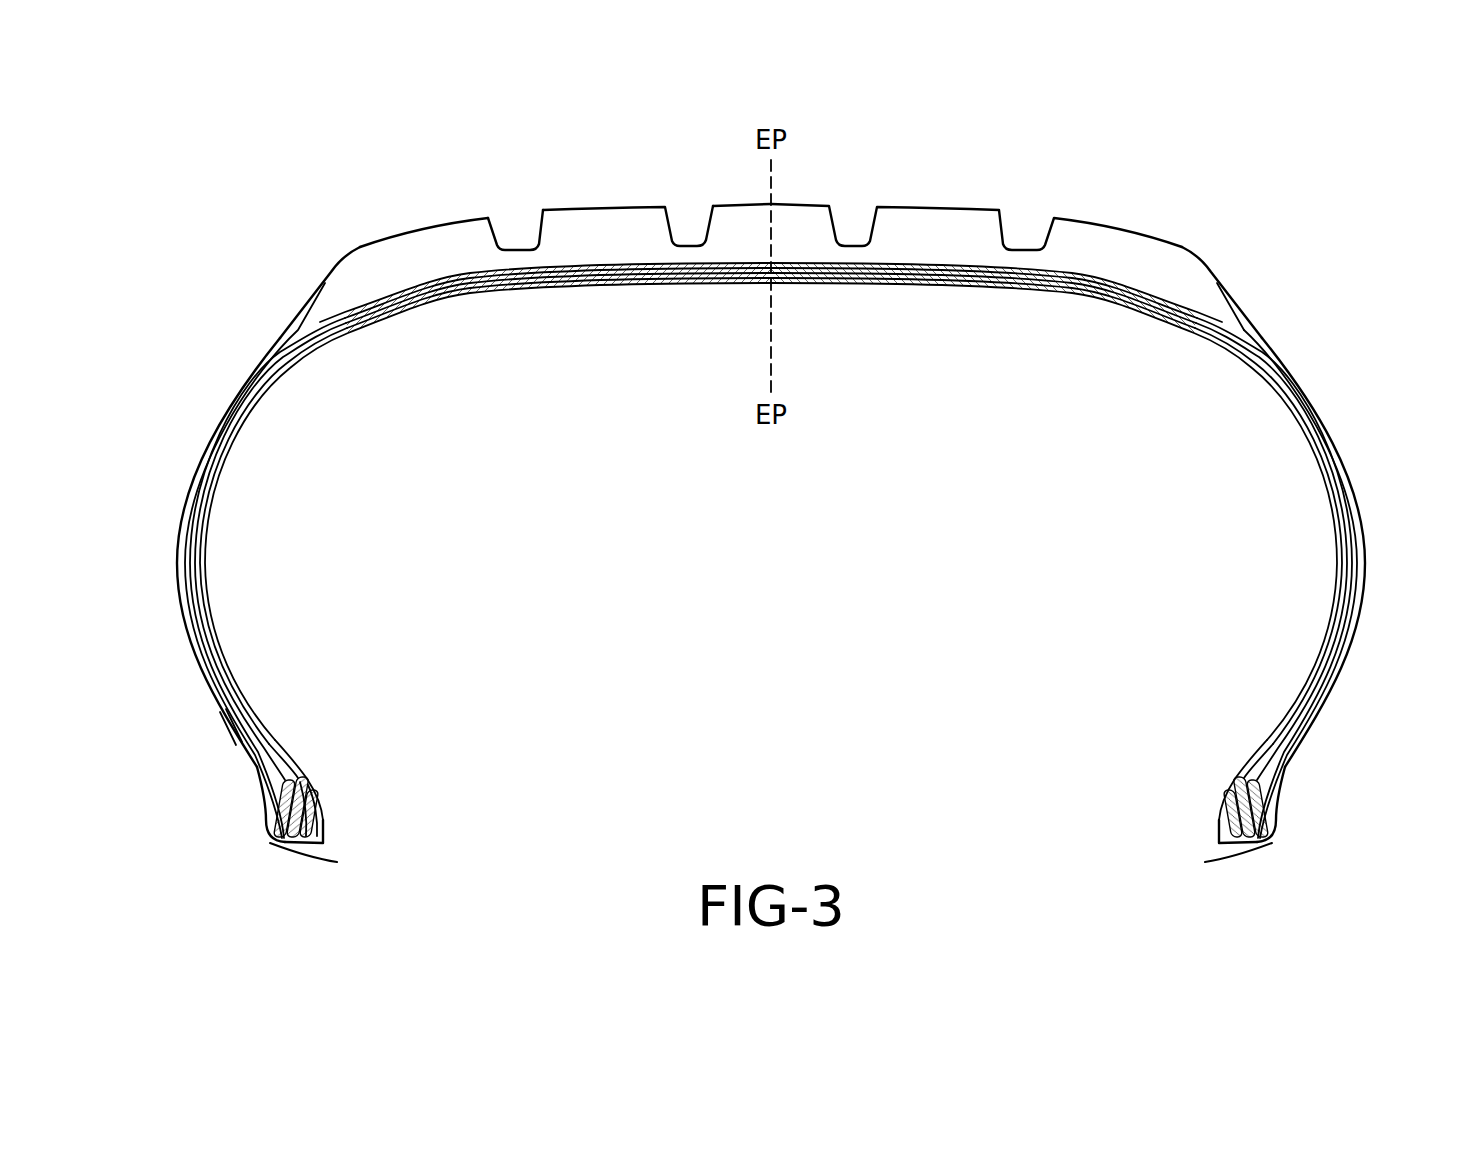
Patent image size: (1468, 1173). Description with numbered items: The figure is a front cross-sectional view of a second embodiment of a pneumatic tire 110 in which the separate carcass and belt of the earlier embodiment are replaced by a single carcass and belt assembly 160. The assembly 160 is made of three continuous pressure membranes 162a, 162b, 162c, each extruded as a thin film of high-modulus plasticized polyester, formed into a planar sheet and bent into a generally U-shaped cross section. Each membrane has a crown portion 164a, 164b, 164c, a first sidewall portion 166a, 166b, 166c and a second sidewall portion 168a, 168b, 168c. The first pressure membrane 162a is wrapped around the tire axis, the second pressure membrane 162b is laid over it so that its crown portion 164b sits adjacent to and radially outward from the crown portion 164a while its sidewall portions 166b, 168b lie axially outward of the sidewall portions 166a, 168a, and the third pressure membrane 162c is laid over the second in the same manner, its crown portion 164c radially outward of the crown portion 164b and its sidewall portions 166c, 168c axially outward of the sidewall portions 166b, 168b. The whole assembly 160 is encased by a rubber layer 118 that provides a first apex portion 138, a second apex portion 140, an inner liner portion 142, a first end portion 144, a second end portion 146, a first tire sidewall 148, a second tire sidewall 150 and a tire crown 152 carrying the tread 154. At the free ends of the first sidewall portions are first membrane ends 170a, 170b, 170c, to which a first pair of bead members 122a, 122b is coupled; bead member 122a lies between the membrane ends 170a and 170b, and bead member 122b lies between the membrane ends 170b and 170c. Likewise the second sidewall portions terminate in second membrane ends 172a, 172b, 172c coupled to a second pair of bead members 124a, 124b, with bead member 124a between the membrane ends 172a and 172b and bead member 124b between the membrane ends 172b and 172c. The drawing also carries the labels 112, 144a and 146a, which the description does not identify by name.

The pneumatic tire 110 is at (198, 206).
The carcass 112 is at (745, 538).
The rubber layer 118 is at (1310, 377).
The bead member 122a is at (297, 803).
The bead member 122b is at (293, 813).
The bead member 124a is at (1243, 790).
The bead member 124b is at (1247, 810).
The first apex portion 138 is at (267, 760).
The second apex portion 140 is at (1267, 807).
The inner liner portion 142 is at (303, 360).
The first end portion 144 is at (263, 820).
The first chafer 144a is at (337, 862).
The second end portion 146 is at (1277, 817).
The second chafer 146a is at (1205, 862).
The first tire sidewall 148 is at (182, 493).
The second tire sidewall 150 is at (1357, 493).
The tire crown 152 is at (1167, 280).
The tread 154 is at (540, 220).
The carcass and belt assembly 160 is at (1250, 337).
The first pressure membrane 162a is at (280, 714).
The second pressure membrane 162b is at (296, 755).
The third pressure membrane 162c is at (247, 725).
The crown portion 164a is at (687, 277).
The crown portion 164b is at (827, 270).
The crown portion 164c is at (934, 272).
The first sidewall portion 166a is at (222, 457).
The first sidewall portion 166b is at (197, 513).
The first sidewall portion 166c is at (217, 430).
The second sidewall portion 168a is at (1322, 457).
The second sidewall portion 168b is at (1343, 513).
The second sidewall portion 168c is at (1320, 430).
The first membrane end 170a is at (310, 827).
The first membrane end 170b is at (305, 843).
The first membrane end 170c is at (297, 843).
The second membrane end 172a is at (1222, 835).
The second membrane end 172b is at (1237, 843).
The second membrane end 172c is at (1250, 813).